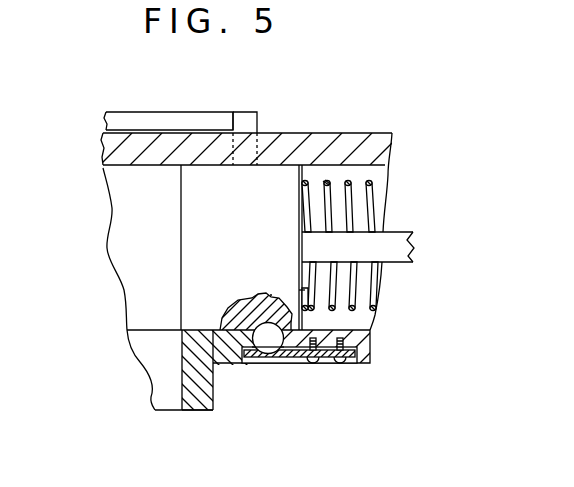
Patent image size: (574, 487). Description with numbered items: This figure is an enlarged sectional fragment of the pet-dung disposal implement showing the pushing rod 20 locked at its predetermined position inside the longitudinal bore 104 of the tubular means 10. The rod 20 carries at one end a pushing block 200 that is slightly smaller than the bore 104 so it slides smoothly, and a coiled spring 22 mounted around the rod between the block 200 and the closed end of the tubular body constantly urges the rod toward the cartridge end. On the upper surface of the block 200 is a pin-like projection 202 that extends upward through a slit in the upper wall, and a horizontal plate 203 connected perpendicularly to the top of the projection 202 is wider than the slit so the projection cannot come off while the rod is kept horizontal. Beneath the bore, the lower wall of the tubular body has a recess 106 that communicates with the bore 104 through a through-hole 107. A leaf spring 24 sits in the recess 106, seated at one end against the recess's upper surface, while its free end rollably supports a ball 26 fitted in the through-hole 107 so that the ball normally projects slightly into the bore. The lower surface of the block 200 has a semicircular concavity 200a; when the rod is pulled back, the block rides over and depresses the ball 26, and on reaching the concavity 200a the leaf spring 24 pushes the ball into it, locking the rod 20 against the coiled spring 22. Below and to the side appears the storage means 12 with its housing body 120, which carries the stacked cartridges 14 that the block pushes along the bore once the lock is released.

The tubular means 10 is at (337, 130).
The storage means 12 is at (218, 393).
The cartridge 14 is at (106, 186).
The pushing rod 20 is at (398, 255).
The coiled spring 22 is at (372, 181).
The leaf spring 24 is at (282, 367).
The ball 26 is at (246, 300).
The longitudinal bore 104 is at (343, 318).
The recess 106 is at (296, 367).
The through-hole 107 is at (258, 365).
The housing body 120 is at (197, 404).
The pushing block 200 is at (268, 180).
The concavity 200a is at (272, 293).
The pin-like projection 202 is at (244, 112).
The horizontal plate 203 is at (151, 112).